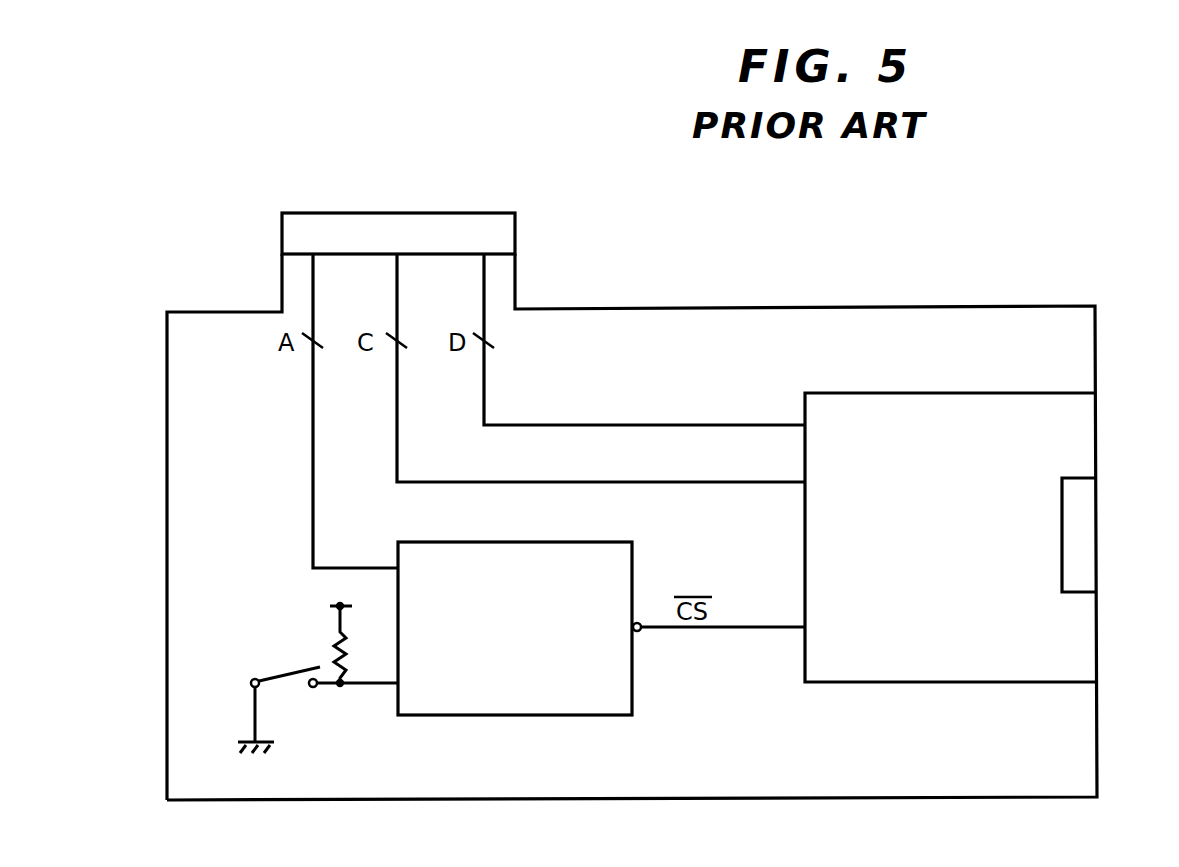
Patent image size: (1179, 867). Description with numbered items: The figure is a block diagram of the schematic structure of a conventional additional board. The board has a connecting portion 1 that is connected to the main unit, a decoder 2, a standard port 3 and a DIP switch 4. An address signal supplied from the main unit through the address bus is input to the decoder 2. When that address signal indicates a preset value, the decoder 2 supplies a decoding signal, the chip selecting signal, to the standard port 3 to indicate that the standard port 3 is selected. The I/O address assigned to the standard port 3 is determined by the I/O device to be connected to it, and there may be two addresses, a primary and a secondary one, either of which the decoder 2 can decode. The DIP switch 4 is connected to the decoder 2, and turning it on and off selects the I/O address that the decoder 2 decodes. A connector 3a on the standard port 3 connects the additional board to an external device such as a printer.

The connecting portion 1 is at (403, 225).
The decoder 2 is at (518, 716).
The standard port 3 is at (917, 392).
The connector 3a is at (1078, 551).
The DIP switch 4 is at (285, 675).